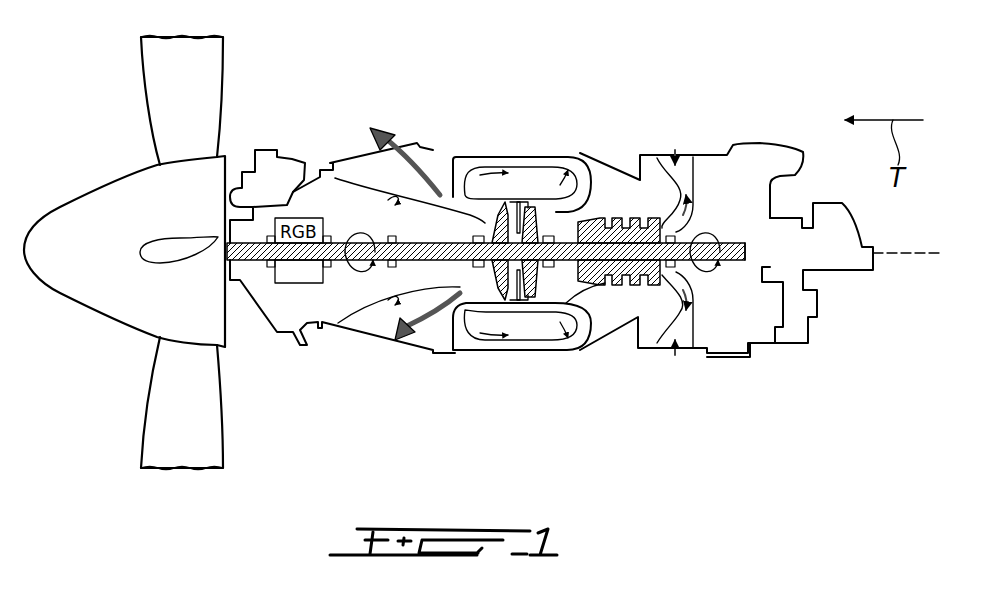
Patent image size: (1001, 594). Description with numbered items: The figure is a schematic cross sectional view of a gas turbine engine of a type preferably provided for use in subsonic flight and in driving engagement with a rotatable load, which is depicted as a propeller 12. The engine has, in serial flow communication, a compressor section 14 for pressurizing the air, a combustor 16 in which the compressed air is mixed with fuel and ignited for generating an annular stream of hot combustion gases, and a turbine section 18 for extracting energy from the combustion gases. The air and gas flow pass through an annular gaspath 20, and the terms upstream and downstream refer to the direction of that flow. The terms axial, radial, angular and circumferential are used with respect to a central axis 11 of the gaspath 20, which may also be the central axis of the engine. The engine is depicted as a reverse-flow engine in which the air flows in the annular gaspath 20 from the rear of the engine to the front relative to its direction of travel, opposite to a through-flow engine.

The central axis 11 is at (905, 253).
The propeller 12 is at (200, 57).
The compressor section 14 is at (622, 193).
The combustor 16 is at (530, 330).
The turbine section 18 is at (478, 282).
The annular gaspath 20 is at (587, 335).